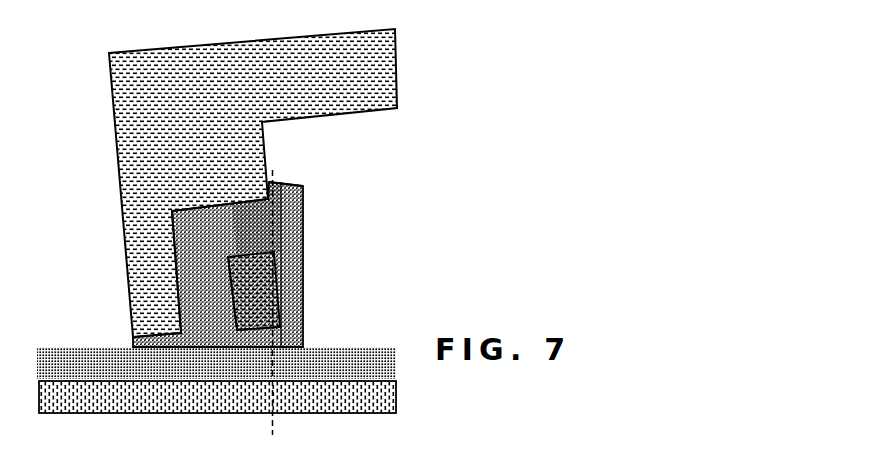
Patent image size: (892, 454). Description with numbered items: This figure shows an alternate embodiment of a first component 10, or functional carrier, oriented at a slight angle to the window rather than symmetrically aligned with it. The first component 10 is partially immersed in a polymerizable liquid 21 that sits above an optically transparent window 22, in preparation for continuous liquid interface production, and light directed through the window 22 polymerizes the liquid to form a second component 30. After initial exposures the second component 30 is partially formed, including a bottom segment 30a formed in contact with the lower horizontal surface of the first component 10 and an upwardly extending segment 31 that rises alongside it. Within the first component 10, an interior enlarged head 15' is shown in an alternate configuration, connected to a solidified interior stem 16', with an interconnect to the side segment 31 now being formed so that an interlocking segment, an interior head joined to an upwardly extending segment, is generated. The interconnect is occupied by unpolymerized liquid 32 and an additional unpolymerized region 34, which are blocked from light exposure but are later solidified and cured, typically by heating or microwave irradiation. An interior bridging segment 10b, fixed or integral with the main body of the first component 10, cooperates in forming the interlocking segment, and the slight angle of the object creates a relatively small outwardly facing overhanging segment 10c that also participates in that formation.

The first component 10 is at (253, 183).
The interior bridging segment 10b is at (253, 287).
The outwardly facing overhanging segment 10c is at (270, 317).
The interior enlarged head 15' is at (206, 234).
The interior stem 16' is at (210, 305).
The polymerizable liquid 21 is at (216, 365).
The optically transparent window 22 is at (217, 397).
The second component 30 is at (318, 242).
The bottom segment 30a is at (252, 334).
The upwardly extending segment 31 is at (298, 270).
The unpolymerized liquid 32 is at (251, 228).
The unpolymerized region 34 is at (273, 182).